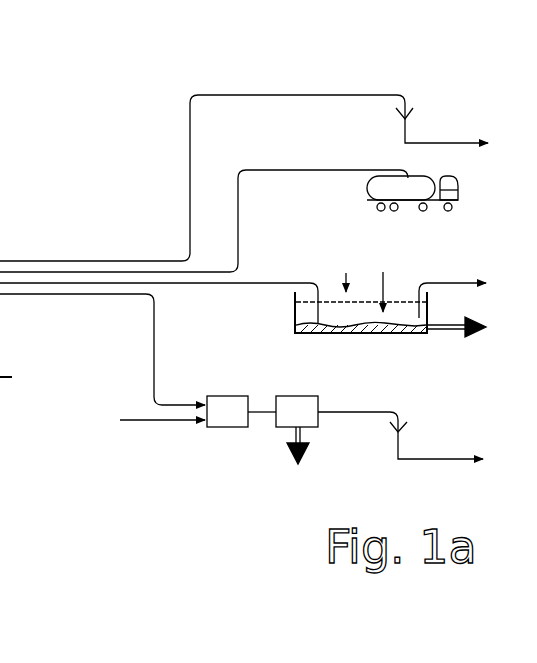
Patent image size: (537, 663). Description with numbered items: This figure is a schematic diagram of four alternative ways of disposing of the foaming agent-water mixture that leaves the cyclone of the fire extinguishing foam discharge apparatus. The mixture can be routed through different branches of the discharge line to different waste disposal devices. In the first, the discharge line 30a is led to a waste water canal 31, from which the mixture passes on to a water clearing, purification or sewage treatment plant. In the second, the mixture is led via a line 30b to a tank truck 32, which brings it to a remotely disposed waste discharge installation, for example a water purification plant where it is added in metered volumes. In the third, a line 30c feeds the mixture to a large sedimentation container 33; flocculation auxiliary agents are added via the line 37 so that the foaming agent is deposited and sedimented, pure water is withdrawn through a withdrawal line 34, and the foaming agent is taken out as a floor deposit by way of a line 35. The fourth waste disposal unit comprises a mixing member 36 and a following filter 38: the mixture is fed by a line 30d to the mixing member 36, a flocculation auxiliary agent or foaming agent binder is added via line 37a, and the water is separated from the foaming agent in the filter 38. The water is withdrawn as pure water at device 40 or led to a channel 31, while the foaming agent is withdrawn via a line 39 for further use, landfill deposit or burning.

The discharge line 30a is at (248, 93).
The line 30b is at (302, 167).
The line 30c is at (225, 286).
The line 30d is at (157, 365).
The waste water canal 31 is at (410, 115).
The tank truck 32 is at (365, 190).
The sedimentation container 33 is at (296, 331).
The withdrawal line 34 is at (465, 281).
The line 35 is at (446, 337).
The mixing member 36 is at (226, 426).
The line 37 is at (373, 279).
The line 37a is at (136, 423).
The filter 38 is at (302, 403).
The line 39 is at (306, 437).
The device 40 is at (364, 410).